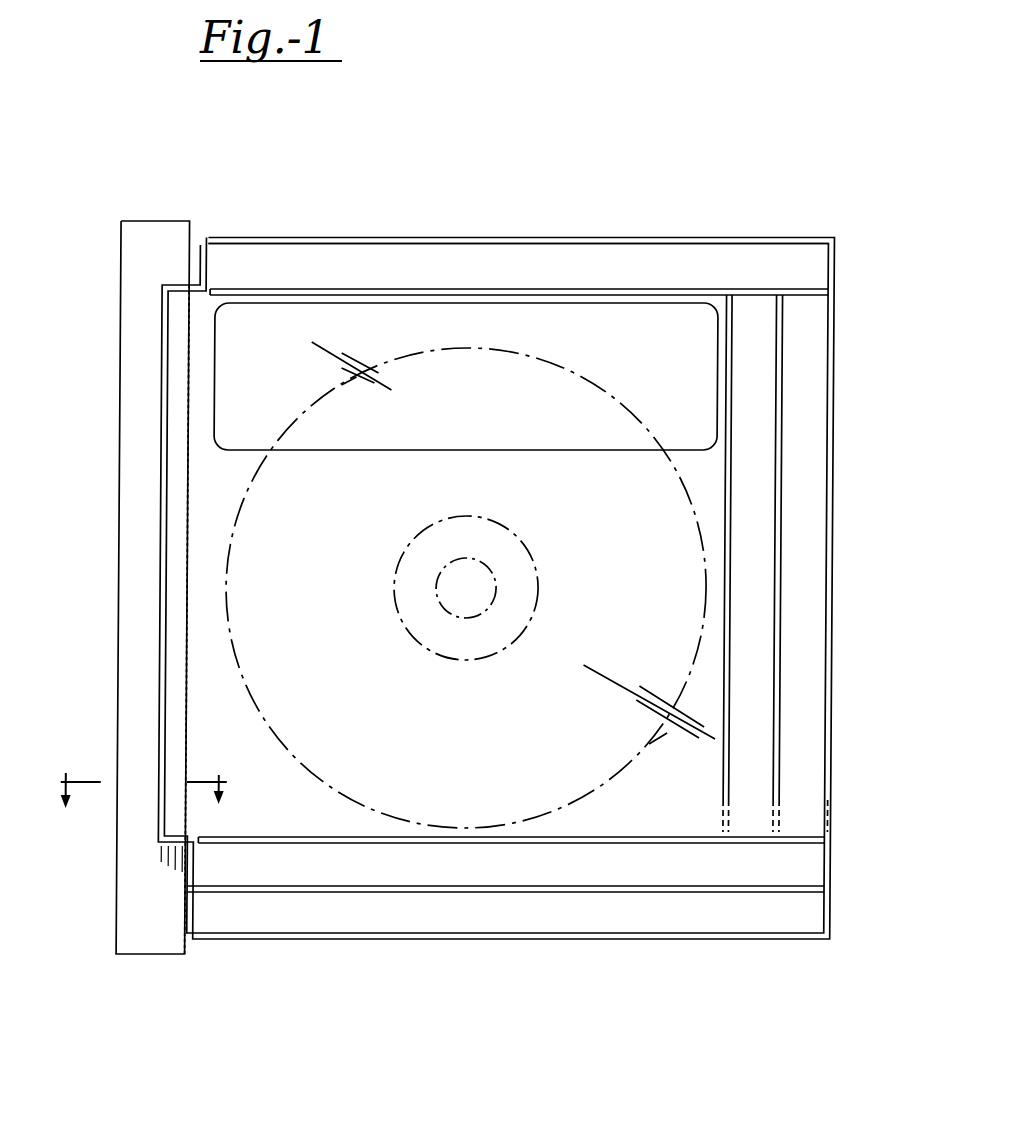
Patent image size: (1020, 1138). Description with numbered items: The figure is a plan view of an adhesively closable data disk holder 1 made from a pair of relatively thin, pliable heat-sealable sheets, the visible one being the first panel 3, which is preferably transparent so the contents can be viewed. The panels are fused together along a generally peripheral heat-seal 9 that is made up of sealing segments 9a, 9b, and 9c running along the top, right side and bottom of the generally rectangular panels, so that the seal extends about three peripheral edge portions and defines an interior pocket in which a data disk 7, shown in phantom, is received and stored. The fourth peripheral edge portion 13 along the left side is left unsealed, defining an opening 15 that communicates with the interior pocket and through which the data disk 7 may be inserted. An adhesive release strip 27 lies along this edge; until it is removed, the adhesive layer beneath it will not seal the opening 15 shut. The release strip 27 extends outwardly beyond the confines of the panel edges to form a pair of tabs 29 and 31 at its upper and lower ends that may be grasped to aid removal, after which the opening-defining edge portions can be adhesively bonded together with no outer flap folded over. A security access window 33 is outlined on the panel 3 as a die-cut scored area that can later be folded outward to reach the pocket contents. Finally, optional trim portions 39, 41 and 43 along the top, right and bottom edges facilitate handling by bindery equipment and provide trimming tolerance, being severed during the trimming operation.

The adhesively closable data disk holder 1 is at (470, 569).
The first panel 3 is at (711, 500).
The data disk 7 is at (607, 788).
The peripheral heat-seal 9 is at (740, 445).
The sealing segment 9a is at (426, 290).
The sealing segment 9b is at (731, 589).
The sealing segment 9c is at (343, 845).
The fourth peripheral edge portion 13 is at (162, 540).
The opening 15 is at (150, 591).
The adhesive release strip 27 is at (133, 733).
The tab 29 is at (160, 240).
The tab 31 is at (158, 935).
The security access window 33 is at (312, 450).
The trim portion 39 is at (598, 262).
The trim portion 41 is at (751, 687).
The trim portion 43 is at (703, 870).